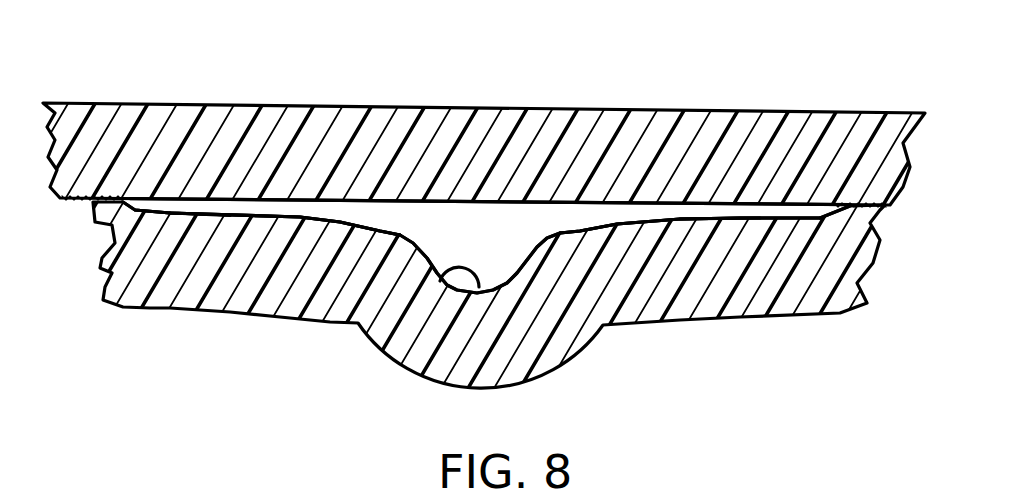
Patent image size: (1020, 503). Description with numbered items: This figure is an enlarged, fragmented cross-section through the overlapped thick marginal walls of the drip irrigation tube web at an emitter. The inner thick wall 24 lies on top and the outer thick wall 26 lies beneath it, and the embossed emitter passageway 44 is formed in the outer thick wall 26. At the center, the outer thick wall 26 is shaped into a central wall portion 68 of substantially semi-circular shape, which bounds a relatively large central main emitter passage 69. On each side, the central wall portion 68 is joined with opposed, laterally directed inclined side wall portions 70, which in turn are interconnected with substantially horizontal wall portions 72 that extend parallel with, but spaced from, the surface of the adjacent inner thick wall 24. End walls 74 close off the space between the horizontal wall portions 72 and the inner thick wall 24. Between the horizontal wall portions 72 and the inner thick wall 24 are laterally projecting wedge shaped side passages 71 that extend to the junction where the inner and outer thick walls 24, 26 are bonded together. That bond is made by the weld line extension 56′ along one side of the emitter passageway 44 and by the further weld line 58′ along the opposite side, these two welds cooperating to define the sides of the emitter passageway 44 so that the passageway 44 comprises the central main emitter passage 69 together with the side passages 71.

The inner thick wall 24 is at (455, 107).
The outer thick wall 26 is at (741, 300).
The emitter passageway 44 is at (448, 226).
The weld line extension 56′ is at (832, 207).
The further weld line 58′ is at (85, 199).
The central wall portion 68 is at (480, 293).
The central main emitter passage 69 is at (488, 243).
The inclined side wall portions 70 is at (332, 217).
The wedge shaped side passages 71 is at (250, 200).
The horizontal wall portions 72 is at (196, 218).
The end walls 74 is at (150, 208).